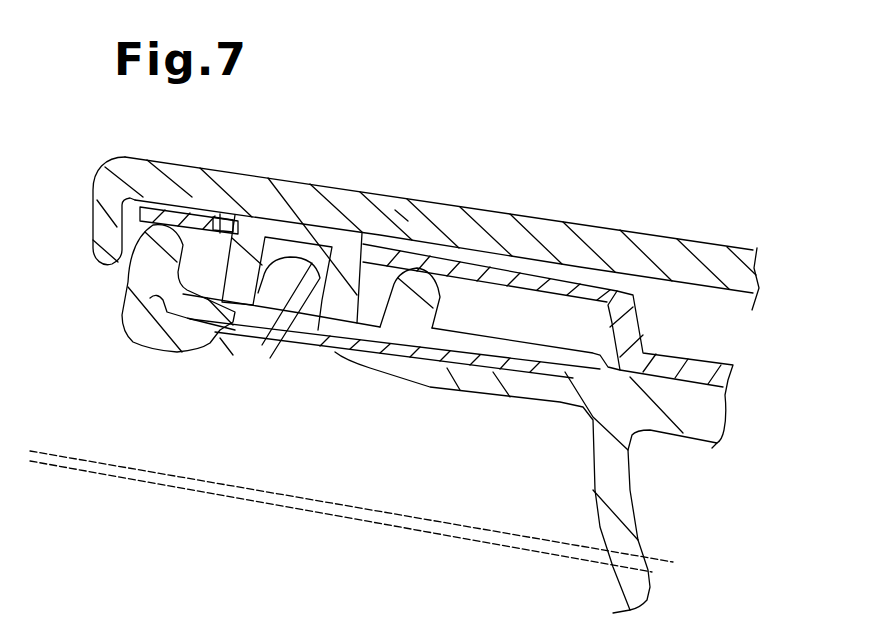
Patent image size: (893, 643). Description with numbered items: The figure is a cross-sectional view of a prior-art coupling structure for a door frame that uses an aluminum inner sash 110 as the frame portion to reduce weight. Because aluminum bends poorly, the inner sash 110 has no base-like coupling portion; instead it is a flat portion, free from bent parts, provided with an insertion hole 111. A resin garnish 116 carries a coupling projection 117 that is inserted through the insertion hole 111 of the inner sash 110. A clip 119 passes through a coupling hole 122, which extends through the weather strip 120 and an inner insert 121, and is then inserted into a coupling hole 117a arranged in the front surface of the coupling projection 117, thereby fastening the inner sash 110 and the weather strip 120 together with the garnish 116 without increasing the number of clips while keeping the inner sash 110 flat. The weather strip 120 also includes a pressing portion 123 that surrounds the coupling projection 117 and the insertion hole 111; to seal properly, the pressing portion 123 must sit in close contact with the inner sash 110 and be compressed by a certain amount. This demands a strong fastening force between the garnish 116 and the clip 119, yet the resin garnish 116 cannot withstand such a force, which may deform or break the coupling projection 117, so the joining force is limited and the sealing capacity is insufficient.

The inner sash 110 is at (562, 280).
The insertion hole 111 is at (355, 233).
The garnish 116 is at (395, 210).
The coupling projection 117 is at (220, 217).
The coupling hole 117a is at (320, 240).
The clip 119 is at (231, 371).
The weather strip 120 is at (585, 430).
The inner insert 121 is at (420, 353).
The coupling hole 122 is at (293, 340).
The pressing portion 123 is at (433, 285).